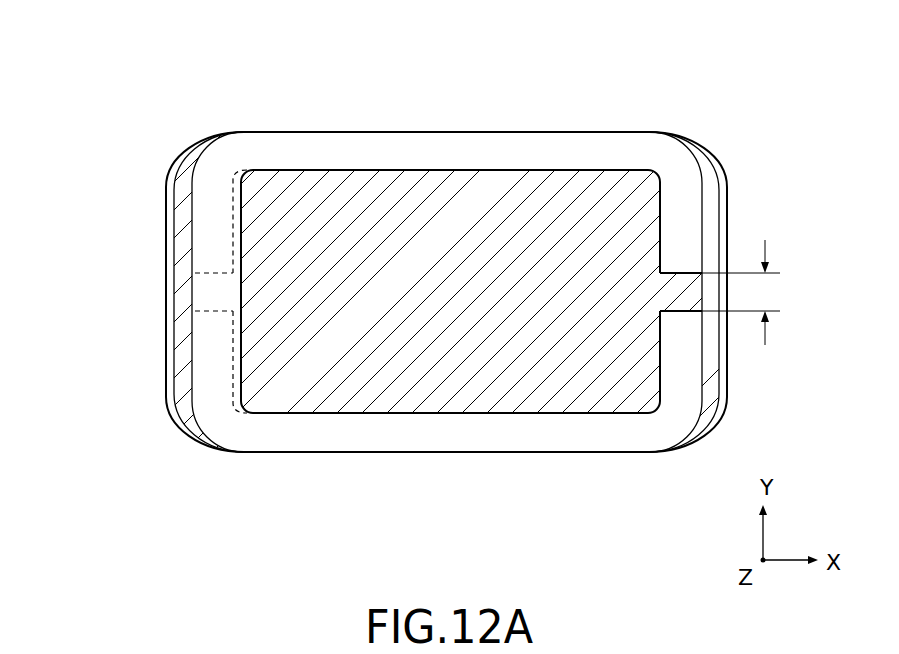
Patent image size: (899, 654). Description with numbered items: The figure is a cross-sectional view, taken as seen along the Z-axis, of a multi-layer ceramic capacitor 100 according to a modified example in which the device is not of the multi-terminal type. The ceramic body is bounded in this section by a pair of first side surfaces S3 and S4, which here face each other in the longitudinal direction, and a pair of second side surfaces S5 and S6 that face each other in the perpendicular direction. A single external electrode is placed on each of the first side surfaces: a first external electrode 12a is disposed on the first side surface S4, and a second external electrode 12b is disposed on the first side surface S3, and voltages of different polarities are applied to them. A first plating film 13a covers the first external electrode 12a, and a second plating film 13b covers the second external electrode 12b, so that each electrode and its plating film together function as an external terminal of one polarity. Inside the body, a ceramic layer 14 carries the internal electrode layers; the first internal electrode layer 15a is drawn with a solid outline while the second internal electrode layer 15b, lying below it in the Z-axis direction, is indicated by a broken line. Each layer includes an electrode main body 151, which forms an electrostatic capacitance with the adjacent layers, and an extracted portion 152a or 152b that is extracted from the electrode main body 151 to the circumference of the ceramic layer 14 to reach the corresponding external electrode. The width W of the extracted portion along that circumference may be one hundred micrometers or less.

The multi-layer ceramic capacitor 100 is at (446, 233).
The first external electrode 12a is at (748, 292).
The second external electrode 12b is at (149, 292).
The first plating film 13a is at (599, 327).
The second plating film 13b is at (360, 327).
The ceramic layer 14 is at (409, 91).
The electrode main body 151 is at (449, 325).
The extracted portion 152a is at (643, 407).
The extracted portion 152b is at (262, 354).
The first internal electrode layer 15a is at (340, 109).
The second internal electrode layer 15b is at (244, 109).
The first side surface S3 is at (121, 139).
The first side surface S4 is at (761, 140).
The second side surface S5 is at (432, 512).
The second side surface S6 is at (473, 75).
The width of the extracted portion W is at (752, 292).